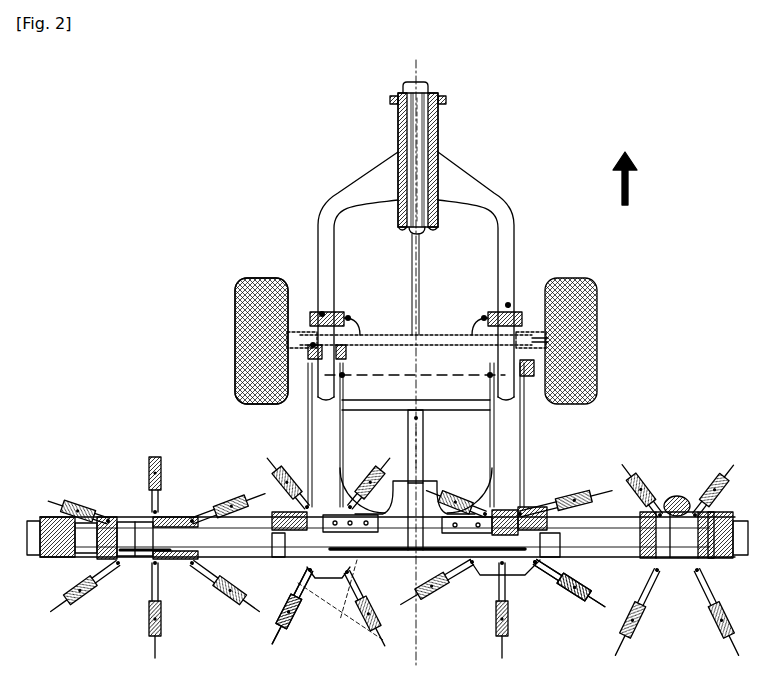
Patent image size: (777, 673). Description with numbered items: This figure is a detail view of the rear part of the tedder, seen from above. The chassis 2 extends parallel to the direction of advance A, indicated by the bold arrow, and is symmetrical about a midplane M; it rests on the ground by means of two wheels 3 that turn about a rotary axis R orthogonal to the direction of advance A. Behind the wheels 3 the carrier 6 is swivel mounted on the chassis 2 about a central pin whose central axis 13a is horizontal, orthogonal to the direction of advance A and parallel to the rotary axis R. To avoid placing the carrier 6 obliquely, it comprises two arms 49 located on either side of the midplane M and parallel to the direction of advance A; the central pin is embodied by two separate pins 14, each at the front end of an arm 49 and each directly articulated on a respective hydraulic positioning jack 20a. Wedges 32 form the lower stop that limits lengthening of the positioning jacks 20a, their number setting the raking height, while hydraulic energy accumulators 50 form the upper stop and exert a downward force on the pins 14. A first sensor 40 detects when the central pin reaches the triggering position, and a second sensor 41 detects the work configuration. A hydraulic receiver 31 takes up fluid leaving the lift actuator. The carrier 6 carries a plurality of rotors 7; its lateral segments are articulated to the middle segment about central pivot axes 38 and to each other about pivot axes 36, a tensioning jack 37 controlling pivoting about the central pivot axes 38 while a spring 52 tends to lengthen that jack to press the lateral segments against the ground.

The chassis 2 is at (376, 180).
The midplane M is at (432, 197).
The direction of advance A is at (618, 187).
The wheel 3 is at (238, 297).
The rotary axis R is at (230, 347).
The first sensor 40 is at (594, 340).
The positioning jack 20a is at (307, 352).
The central axis 13a is at (594, 370).
The pin 14 is at (347, 377).
The wedge 32 is at (318, 312).
The energy accumulator 50 is at (352, 318).
The second sensor 41 is at (310, 378).
The carrier 6 is at (318, 463).
The arm 49 is at (312, 508).
The pivot axis 36 is at (120, 572).
The hydraulic receiver 31 is at (430, 592).
The tensioning jack 37 is at (430, 592).
The spring 52 is at (372, 580).
The rotor 7 is at (152, 428).
The central pivot axis 38 is at (288, 585).